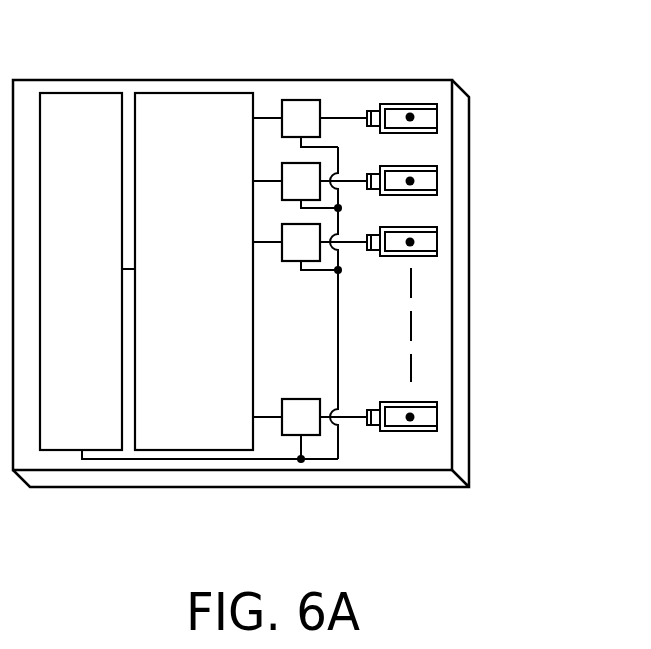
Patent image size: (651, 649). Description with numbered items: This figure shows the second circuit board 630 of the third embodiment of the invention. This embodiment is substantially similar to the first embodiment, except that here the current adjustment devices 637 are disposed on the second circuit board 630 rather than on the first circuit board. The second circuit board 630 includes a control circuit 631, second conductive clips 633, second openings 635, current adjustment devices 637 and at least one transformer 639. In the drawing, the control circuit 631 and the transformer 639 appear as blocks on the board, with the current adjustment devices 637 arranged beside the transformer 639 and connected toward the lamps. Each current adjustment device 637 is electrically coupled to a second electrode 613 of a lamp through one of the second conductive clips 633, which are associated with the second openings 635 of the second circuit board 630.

The second circuit board 630 is at (499, 509).
The control circuit 631 is at (81, 92).
The transformer 639 is at (195, 92).
The current adjustment device 637 is at (301, 100).
The second conductive clip 633 is at (450, 228).
The second opening 635 is at (426, 104).
The second electrode 613 is at (414, 117).